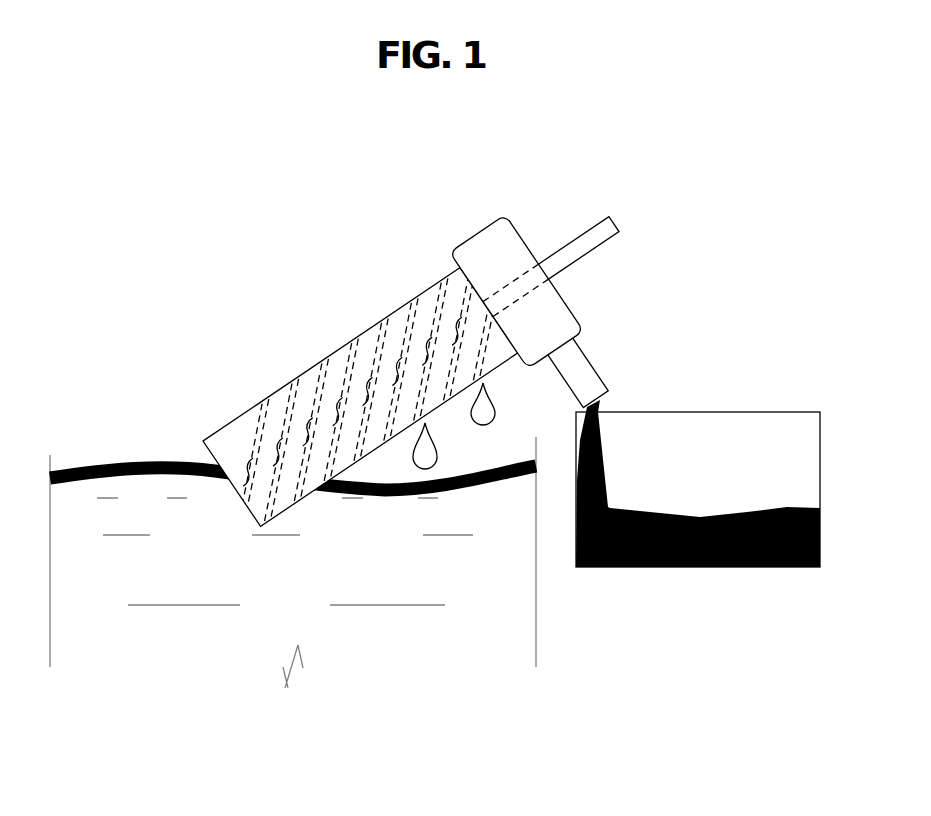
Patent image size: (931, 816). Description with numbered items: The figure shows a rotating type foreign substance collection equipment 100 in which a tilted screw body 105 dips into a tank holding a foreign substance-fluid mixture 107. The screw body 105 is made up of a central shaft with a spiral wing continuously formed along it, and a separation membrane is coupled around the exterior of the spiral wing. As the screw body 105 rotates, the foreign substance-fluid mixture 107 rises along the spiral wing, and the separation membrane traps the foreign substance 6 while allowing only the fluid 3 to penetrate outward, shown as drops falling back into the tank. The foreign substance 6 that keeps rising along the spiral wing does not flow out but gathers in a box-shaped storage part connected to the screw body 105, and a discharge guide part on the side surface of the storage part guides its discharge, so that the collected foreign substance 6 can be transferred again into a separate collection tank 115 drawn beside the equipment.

The rotating type foreign substance collection equipment 100 is at (392, 259).
The screw body 105 is at (690, 655).
The foreign substance-fluid mixture 107 is at (255, 727).
The collection tank 115 is at (773, 440).
The foreign substance 6 is at (213, 478).
The fluid 3 is at (432, 460).